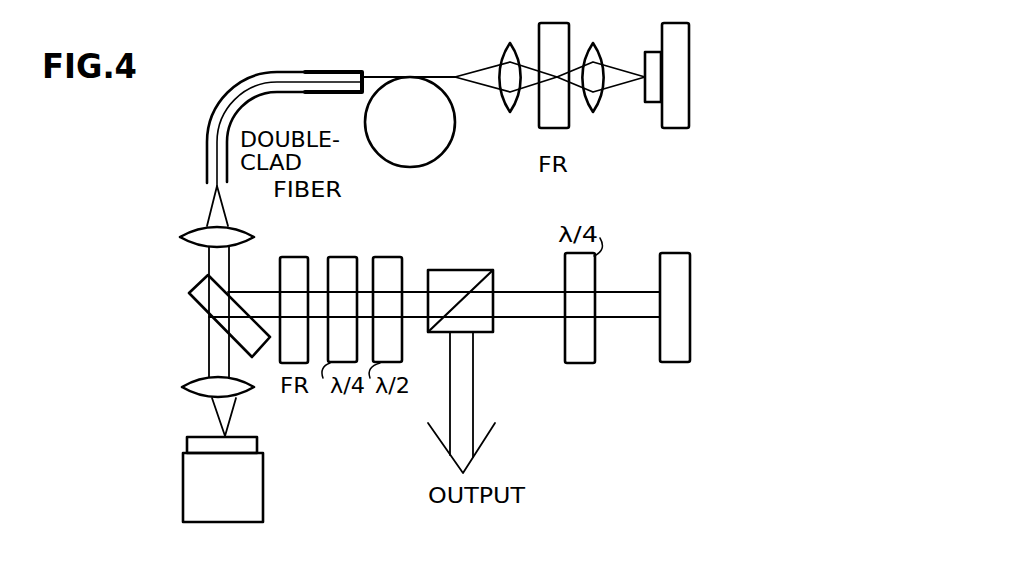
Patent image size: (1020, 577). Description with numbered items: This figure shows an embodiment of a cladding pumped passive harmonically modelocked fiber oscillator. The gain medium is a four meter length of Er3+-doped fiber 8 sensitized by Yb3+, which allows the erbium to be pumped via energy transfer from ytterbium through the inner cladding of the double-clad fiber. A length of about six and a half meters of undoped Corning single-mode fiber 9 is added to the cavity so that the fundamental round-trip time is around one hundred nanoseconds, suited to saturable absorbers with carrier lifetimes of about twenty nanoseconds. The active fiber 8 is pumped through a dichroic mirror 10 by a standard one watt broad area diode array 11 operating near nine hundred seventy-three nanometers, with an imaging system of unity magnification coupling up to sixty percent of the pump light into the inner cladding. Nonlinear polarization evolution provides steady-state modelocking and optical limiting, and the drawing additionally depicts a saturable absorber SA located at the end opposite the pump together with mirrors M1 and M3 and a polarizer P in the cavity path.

The Er3+-doped fiber 8 is at (237, 88).
The undoped Corning SMF-28 fiber 9 is at (400, 77).
The dichroic mirror 10 is at (190, 295).
The diode array 11 is at (185, 503).
The saturable absorber SA is at (650, 52).
The mirror M1 is at (664, 128).
The mirror M3 is at (664, 362).
The polarizer P is at (470, 270).